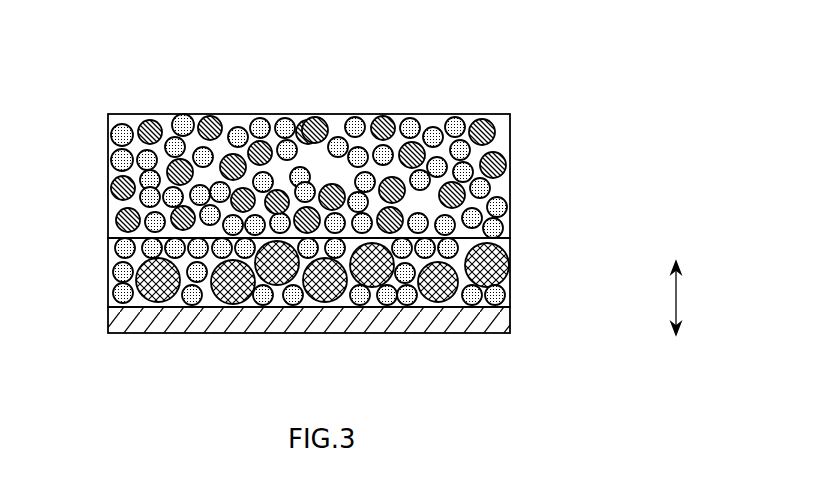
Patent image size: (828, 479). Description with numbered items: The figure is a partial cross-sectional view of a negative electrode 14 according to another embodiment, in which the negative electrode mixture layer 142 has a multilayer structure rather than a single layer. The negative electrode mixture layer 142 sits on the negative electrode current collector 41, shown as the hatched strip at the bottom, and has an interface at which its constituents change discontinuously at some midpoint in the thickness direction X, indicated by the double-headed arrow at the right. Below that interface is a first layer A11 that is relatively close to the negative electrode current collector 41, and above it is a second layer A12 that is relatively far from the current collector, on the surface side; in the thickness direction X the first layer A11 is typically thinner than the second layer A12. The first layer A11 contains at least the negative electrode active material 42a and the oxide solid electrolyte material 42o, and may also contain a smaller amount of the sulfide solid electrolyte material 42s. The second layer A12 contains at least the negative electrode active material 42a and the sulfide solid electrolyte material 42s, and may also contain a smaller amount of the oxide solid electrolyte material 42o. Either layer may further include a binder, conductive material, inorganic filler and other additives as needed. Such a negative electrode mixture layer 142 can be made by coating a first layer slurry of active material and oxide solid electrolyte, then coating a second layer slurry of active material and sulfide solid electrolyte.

The negative electrode 14 is at (628, 37).
The negative electrode mixture layer 142 is at (597, 115).
The second layer A12 is at (525, 115).
The first layer A11 is at (525, 240).
The negative electrode current collector 41 is at (512, 325).
The negative electrode active material 42a is at (186, 113).
The sulfide solid electrolyte material 42s is at (319, 113).
The oxide solid electrolyte material 42o is at (112, 284).
The thickness direction X is at (688, 298).